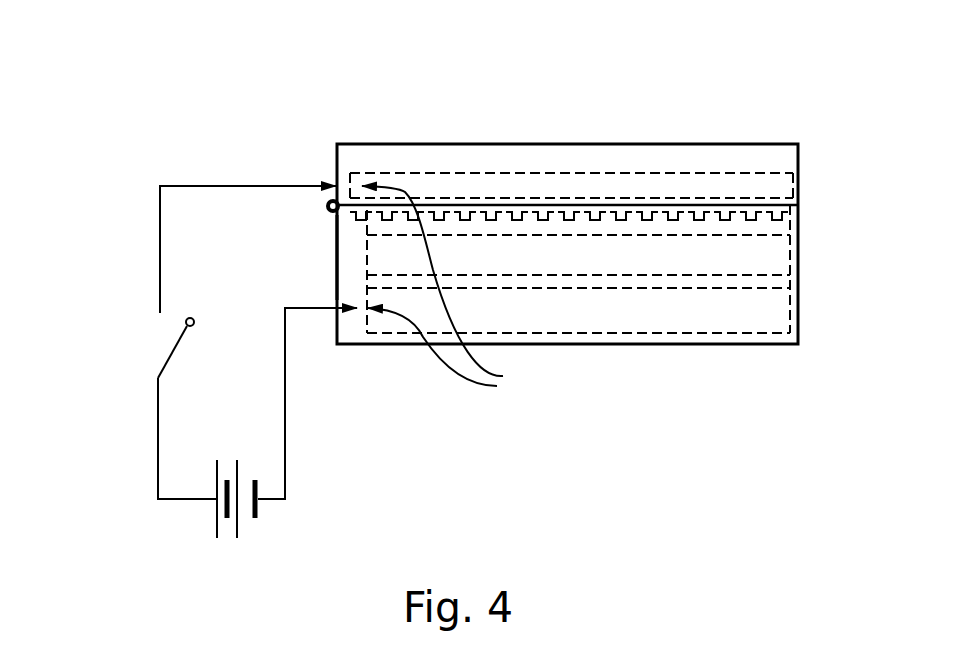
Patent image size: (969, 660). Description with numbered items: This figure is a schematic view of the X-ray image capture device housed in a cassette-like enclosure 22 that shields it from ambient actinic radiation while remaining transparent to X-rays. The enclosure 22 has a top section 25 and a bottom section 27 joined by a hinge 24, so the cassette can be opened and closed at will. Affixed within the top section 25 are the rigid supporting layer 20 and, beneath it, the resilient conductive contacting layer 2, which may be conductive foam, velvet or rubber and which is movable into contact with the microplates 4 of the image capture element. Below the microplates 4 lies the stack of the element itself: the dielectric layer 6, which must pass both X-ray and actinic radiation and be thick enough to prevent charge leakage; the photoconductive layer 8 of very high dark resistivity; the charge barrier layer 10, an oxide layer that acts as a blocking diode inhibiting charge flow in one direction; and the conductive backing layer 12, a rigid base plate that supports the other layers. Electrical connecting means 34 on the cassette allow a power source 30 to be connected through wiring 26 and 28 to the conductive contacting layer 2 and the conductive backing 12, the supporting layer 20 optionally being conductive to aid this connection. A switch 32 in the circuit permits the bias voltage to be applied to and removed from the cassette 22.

The conductive contacting layer 2 is at (657, 202).
The microplates 4 is at (750, 210).
The dielectric layer 6 is at (773, 228).
The photoconductive layer 8 is at (760, 252).
The charge barrier layer 10 is at (733, 283).
The conductive backing layer 12 is at (678, 313).
The supporting layer 20 is at (585, 185).
The cassette enclosure 22 is at (435, 142).
The hinge 24 is at (323, 210).
The top section 25 is at (537, 148).
The wiring 26 is at (253, 184).
The bottom section 27 is at (353, 277).
The wiring 28 is at (288, 396).
The power source 30 is at (216, 531).
The switch 32 is at (181, 348).
The electrical connecting means 34 is at (452, 291).